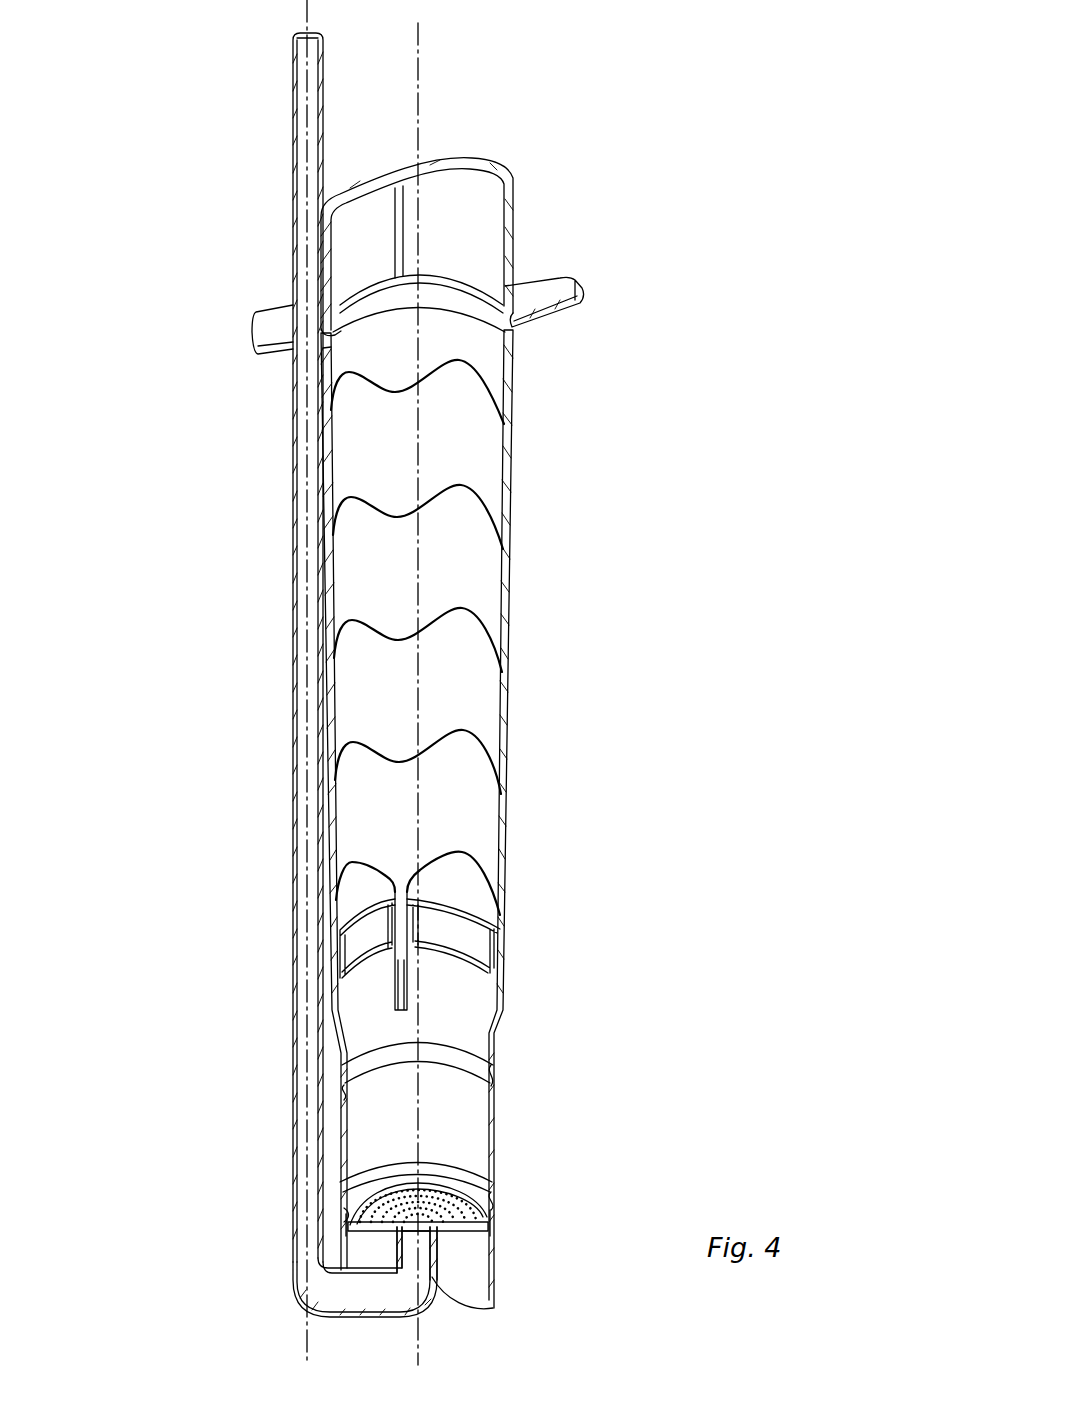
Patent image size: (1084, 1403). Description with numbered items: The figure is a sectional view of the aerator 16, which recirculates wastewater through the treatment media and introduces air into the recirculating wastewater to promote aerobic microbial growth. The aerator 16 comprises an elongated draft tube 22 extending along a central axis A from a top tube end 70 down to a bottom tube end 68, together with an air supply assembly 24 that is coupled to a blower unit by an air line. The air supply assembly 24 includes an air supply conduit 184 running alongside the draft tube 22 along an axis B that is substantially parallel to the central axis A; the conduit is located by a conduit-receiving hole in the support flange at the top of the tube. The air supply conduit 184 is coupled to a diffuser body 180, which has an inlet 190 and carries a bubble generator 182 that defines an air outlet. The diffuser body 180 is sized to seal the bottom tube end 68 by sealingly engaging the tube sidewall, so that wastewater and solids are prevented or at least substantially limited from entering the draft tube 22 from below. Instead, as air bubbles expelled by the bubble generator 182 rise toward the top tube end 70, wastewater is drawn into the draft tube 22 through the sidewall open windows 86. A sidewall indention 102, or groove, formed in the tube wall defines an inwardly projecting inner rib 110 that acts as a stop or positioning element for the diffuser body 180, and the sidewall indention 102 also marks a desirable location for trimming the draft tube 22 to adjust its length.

The aerator 16 is at (430, 688).
The draft tube 22 is at (512, 598).
The air supply assembly 24 is at (308, 1282).
The bottom tube end 68 is at (507, 1326).
The top tube end 70 is at (421, 236).
The sidewall open windows 86 is at (408, 956).
The sidewall indention 102 is at (470, 1193).
The inner rib 110 is at (490, 1227).
The diffuser body 180 is at (489, 1247).
The bubble generator 182 is at (443, 1193).
The air supply conduit 184 is at (246, 647).
The inlet 190 is at (424, 1249).
The central axis A is at (422, 45).
The axis of the conduit-receiving hole B is at (300, 287).